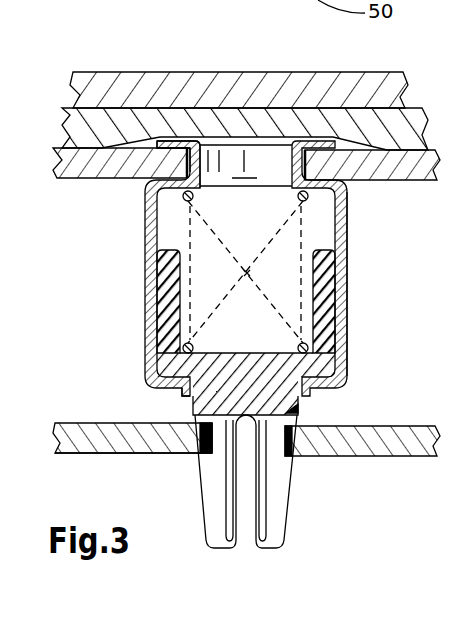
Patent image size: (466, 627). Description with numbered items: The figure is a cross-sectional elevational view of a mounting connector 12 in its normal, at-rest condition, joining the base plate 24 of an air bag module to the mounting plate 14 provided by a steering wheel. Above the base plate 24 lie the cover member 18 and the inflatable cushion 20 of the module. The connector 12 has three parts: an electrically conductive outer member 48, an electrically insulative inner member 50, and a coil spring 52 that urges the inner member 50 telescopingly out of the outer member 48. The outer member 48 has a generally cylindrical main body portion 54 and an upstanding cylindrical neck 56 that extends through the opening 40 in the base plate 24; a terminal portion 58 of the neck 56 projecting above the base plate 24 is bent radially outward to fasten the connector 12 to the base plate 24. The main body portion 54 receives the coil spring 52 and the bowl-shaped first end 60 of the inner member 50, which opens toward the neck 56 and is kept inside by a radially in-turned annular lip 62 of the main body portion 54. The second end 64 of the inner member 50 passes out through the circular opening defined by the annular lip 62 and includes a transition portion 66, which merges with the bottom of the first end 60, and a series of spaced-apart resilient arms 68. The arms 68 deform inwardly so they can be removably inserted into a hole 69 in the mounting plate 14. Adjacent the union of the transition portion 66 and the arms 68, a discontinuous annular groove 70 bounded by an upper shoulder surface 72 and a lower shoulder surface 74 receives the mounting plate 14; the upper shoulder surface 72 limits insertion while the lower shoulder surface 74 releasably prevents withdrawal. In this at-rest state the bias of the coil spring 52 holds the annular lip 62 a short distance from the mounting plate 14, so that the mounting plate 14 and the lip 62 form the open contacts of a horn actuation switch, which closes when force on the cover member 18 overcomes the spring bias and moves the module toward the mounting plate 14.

The mounting connector 12 is at (112, 270).
The mounting plate 14 is at (83, 435).
The cover member 18 is at (380, 92).
The inflatable cushion 20 is at (407, 124).
The base plate 24 is at (183, 158).
The opening 40 is at (188, 160).
The outer member 48 is at (348, 237).
The inner member 50 is at (236, 370).
The coil spring 52 is at (299, 198).
The main body portion 54 is at (348, 298).
The neck 56 is at (290, 160).
The terminal portion 58 is at (170, 140).
The first end 60 is at (175, 296).
The annular lip 62 is at (183, 392).
The second end 64 is at (190, 495).
The transition portion 66 is at (300, 408).
The resilient arms 68 is at (208, 518).
The hole 69 is at (297, 437).
The annular groove 70 is at (200, 443).
The upper shoulder surface 72 is at (203, 432).
The lower shoulder surface 74 is at (203, 445).